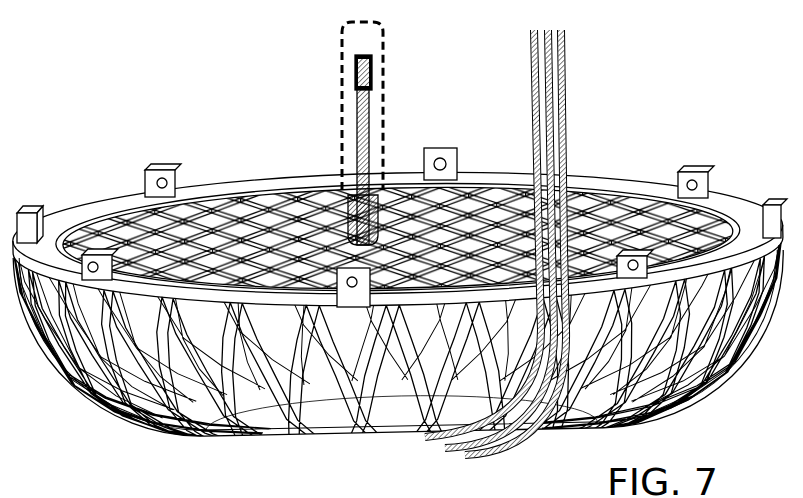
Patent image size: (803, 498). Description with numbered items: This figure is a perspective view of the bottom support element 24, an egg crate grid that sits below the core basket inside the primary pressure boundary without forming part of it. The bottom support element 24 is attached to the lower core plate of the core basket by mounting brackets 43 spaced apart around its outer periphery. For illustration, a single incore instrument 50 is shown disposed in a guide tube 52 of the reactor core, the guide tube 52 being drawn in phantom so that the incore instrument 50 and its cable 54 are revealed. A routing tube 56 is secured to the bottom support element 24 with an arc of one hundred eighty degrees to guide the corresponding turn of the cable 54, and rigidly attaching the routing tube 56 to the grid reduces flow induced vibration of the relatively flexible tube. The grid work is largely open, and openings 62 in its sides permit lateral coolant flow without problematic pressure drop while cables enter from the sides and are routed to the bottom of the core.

The bottom support element 24 is at (120, 131).
The mounting brackets 43 is at (770, 207).
The incore instrument 50 is at (353, 72).
The guide tube 52 is at (345, 128).
The cable 54 is at (532, 85).
The routing tube 56 is at (530, 172).
The openings 62 is at (265, 390).